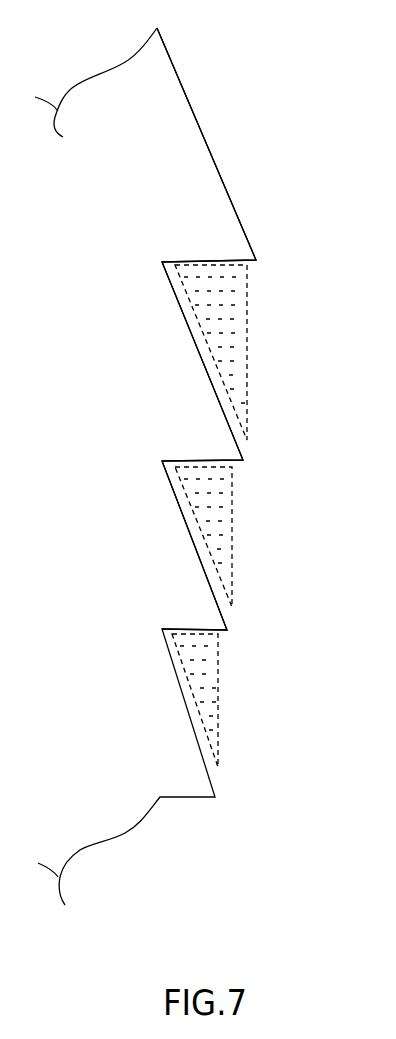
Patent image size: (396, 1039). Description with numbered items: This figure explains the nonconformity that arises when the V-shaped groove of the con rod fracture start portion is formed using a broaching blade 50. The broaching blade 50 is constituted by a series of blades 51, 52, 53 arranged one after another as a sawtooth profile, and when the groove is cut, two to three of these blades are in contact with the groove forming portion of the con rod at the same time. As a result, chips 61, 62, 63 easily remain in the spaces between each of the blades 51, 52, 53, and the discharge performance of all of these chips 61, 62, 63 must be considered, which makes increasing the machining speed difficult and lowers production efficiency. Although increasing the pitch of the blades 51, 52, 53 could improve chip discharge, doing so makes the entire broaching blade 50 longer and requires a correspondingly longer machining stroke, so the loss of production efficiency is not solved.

The broaching blade 50 is at (233, 98).
The blade 51 is at (227, 233).
The blade 52 is at (228, 452).
The blade 53 is at (212, 620).
The chips 61 is at (245, 320).
The chips 62 is at (232, 527).
The chips 63 is at (218, 690).